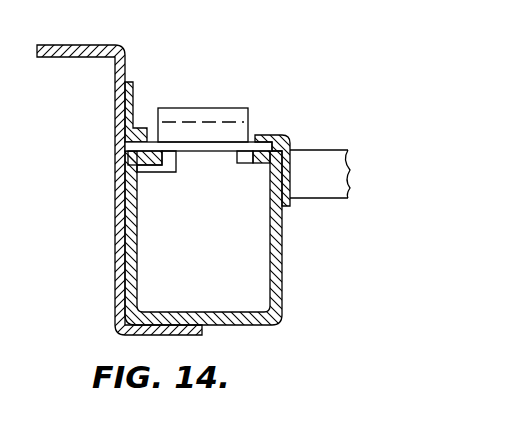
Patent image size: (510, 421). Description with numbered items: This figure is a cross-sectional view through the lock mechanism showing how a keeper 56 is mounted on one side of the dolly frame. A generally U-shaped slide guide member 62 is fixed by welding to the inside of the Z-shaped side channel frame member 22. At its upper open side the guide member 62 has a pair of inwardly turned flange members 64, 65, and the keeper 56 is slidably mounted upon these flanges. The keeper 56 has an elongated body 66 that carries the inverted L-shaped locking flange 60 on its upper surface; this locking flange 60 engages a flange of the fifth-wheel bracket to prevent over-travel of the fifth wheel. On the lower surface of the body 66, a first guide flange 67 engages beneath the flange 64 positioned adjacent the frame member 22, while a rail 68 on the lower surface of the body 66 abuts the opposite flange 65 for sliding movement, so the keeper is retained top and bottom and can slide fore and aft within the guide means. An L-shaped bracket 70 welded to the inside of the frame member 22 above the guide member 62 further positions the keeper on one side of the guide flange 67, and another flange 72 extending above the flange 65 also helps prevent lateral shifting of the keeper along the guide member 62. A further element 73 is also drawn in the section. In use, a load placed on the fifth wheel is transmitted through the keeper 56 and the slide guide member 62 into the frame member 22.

The side channel frame member 22 is at (117, 172).
The keeper 56 is at (209, 69).
The locking flange 60 is at (222, 108).
The slide guide member 62 is at (277, 322).
The inwardly turned flange member 64 is at (150, 160).
The inwardly turned flange member 65 is at (268, 163).
The keeper body 66 is at (265, 148).
The first guide flange 67 is at (177, 172).
The rail 68 is at (247, 163).
The L-shaped bracket 70 is at (133, 90).
The flange 72 is at (258, 142).
The pipe 73 is at (335, 163).